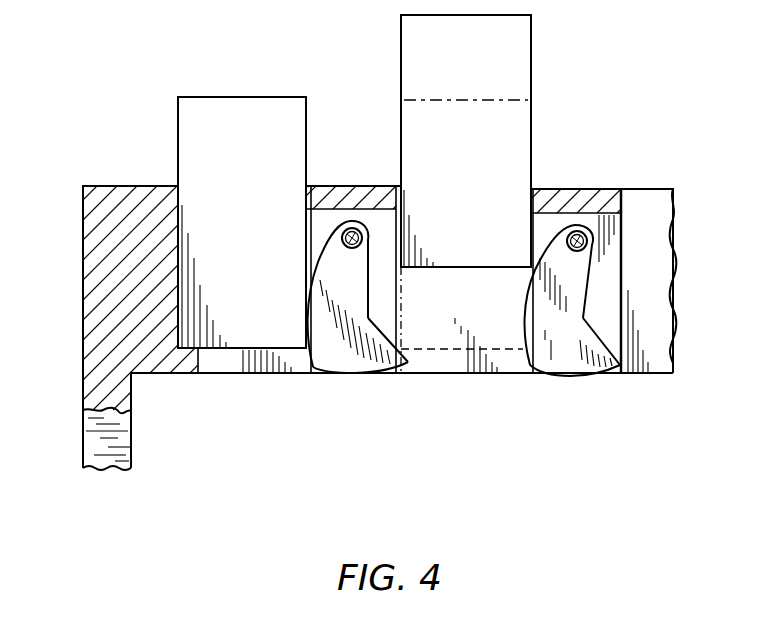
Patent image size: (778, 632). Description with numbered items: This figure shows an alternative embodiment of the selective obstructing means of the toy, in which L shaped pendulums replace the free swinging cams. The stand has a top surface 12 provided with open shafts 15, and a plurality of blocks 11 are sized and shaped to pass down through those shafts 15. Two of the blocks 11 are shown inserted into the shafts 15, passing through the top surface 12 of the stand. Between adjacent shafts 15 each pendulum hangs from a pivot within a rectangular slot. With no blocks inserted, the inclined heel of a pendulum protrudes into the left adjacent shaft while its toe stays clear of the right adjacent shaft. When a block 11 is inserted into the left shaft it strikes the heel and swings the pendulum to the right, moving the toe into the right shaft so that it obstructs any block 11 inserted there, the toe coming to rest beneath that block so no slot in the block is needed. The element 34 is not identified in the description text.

The blocks 11 is at (179, 120).
The top surface 12 is at (84, 262).
The open shafts 15 is at (265, 367).
The housing step / shoulder 34 is at (200, 362).